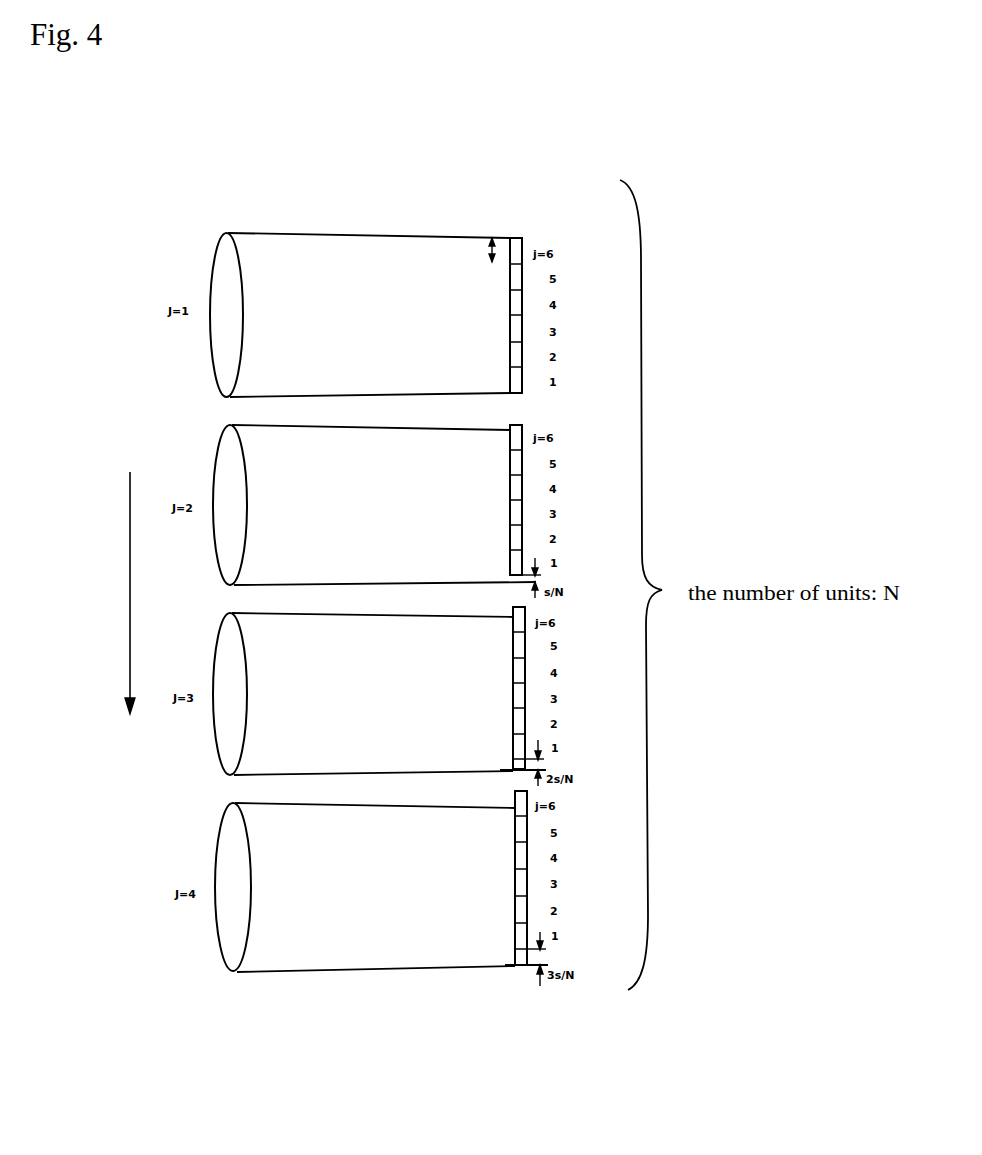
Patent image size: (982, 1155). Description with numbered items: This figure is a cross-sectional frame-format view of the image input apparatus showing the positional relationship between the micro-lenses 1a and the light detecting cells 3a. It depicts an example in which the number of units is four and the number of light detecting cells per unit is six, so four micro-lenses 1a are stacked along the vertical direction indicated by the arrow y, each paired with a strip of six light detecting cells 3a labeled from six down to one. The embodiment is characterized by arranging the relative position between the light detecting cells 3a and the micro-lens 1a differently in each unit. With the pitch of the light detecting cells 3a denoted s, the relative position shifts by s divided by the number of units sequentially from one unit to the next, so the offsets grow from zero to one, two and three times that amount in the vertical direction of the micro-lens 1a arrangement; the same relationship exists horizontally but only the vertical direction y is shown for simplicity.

The micro-lens 1a is at (223, 236).
The light detecting cell 3a is at (514, 237).
The pitch of light detecting cells s is at (484, 250).
The vertical direction arrow y is at (122, 593).